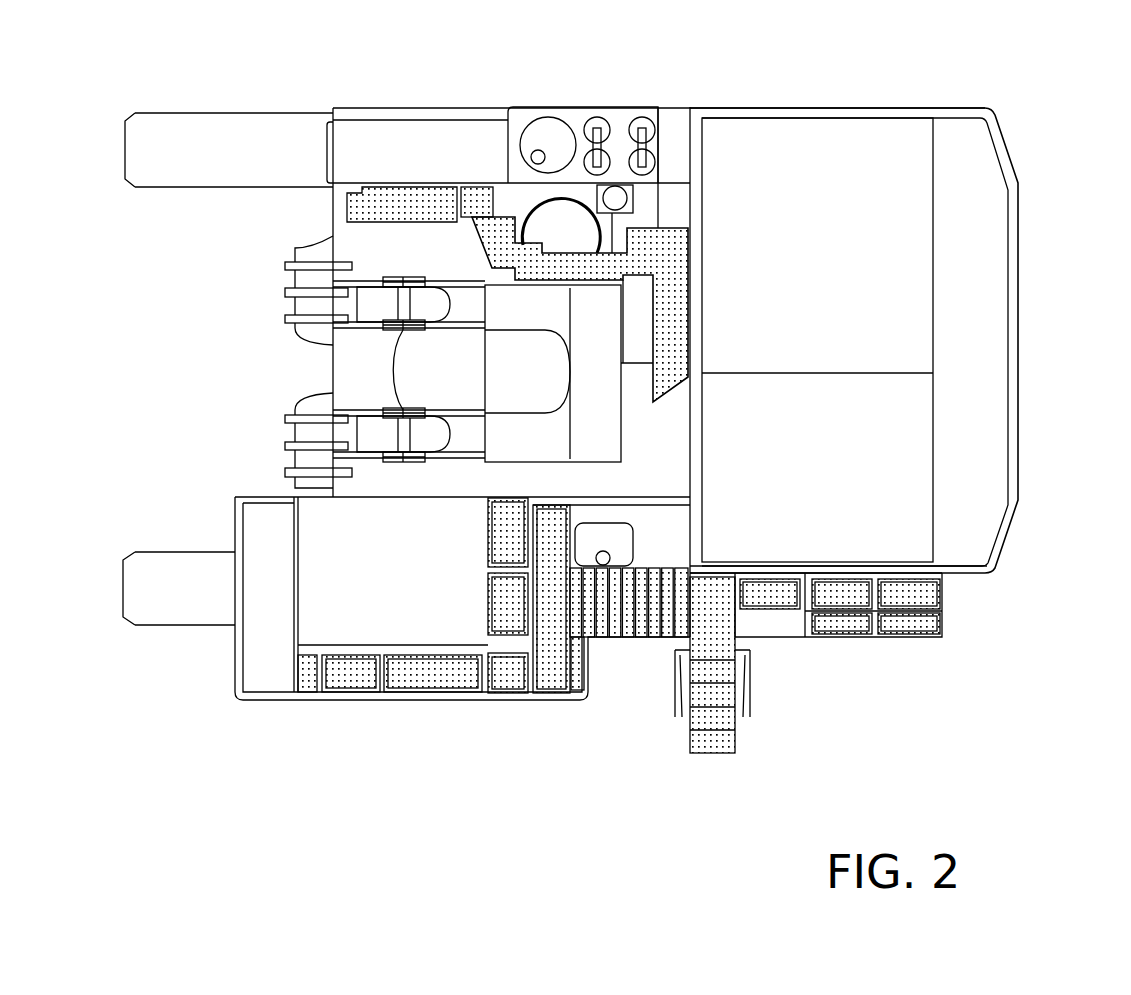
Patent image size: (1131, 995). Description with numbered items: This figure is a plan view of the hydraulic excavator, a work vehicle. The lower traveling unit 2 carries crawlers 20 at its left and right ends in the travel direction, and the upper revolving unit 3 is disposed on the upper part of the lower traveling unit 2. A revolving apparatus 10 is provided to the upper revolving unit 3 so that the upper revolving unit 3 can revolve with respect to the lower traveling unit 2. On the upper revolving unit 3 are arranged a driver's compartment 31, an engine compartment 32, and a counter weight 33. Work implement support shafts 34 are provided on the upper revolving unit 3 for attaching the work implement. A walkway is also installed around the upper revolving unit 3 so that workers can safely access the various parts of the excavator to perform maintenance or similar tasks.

The lower traveling unit 2 is at (592, 407).
The upper revolving unit 3 is at (906, 313).
The revolving apparatus 10 is at (567, 222).
The crawlers 20 is at (165, 170).
The driver's compartment 31 is at (315, 615).
The engine compartment 32 is at (842, 203).
The counter weight 33 is at (973, 342).
The work implement support shafts 34 is at (403, 302).